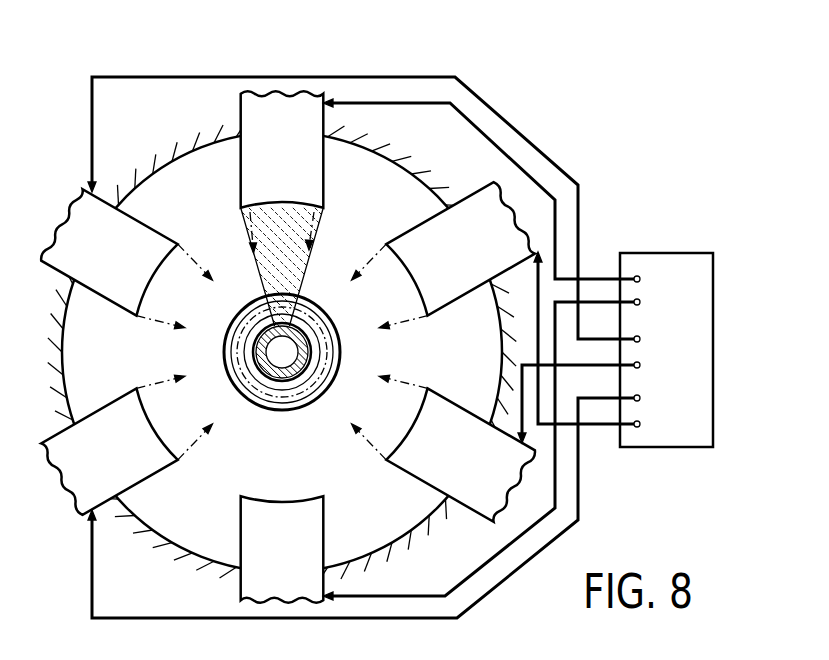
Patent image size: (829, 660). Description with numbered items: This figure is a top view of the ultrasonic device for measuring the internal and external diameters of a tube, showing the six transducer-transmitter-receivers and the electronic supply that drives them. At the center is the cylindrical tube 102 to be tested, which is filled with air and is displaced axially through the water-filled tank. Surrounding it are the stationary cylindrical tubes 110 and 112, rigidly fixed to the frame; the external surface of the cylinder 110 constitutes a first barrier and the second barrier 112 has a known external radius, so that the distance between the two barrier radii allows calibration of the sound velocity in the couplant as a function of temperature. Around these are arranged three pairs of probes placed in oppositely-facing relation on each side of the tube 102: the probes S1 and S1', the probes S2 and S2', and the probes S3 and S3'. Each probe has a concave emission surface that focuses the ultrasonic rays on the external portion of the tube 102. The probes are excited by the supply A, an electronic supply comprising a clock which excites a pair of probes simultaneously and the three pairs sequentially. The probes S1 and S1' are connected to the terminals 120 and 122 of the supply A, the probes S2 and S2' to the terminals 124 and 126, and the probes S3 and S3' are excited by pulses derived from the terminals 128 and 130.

The tube 102 is at (263, 336).
The cylindrical tube 110 is at (311, 378).
The second barrier 112 is at (246, 388).
The terminal 120 is at (505, 194).
The terminal 122 is at (505, 445).
The terminal 124 is at (388, 213).
The terminal 126 is at (603, 398).
The terminal 128 is at (388, 502).
The terminal 130 is at (611, 343).
The supply A is at (695, 268).
The transmitter-receiver probe S1 is at (282, 149).
The probe S2 is at (108, 252).
The probe S3 is at (108, 452).
The transmitter-receiver probe S1' is at (282, 549).
The probe S2' is at (461, 455).
The probe S3' is at (461, 248).